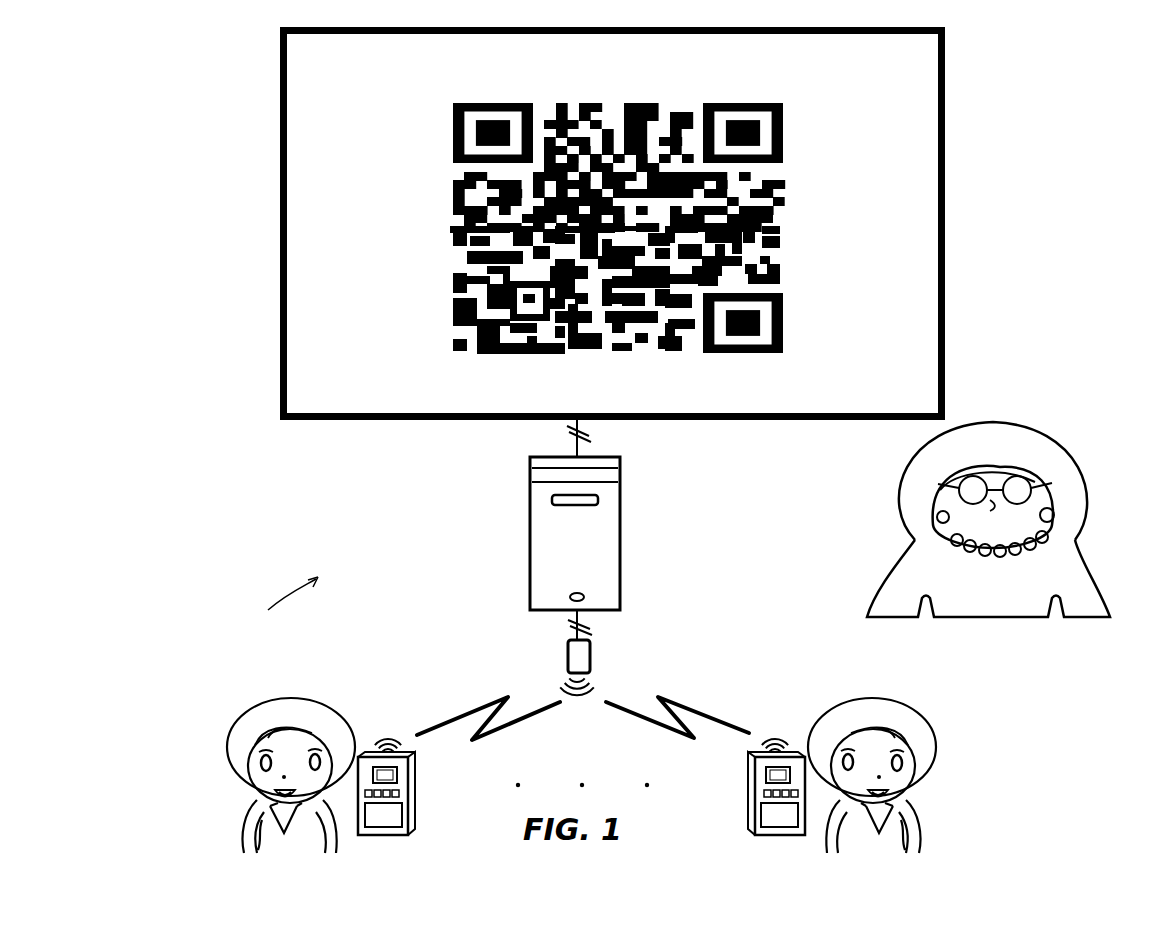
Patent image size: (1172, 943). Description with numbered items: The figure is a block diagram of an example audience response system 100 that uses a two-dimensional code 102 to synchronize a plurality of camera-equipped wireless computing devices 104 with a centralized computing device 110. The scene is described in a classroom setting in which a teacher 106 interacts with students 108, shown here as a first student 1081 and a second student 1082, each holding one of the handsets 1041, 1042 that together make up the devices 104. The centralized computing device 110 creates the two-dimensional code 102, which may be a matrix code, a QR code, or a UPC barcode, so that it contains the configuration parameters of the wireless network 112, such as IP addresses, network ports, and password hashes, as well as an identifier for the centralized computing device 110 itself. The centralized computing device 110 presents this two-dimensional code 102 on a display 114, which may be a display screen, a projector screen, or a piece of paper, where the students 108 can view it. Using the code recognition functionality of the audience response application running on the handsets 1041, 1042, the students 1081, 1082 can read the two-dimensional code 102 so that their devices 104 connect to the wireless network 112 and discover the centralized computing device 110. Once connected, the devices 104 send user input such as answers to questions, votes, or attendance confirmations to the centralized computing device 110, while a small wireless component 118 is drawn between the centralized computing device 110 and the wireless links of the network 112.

The audience response system 100 is at (273, 601).
The two-dimensional code 102 is at (782, 102).
The camera-equipped wireless computing devices 104 is at (581, 787).
The handset 1041 is at (416, 818).
The handset 1042 is at (750, 818).
The teacher 106 is at (960, 427).
The students 108 is at (581, 763).
The student 1081 is at (243, 710).
The student 1082 is at (830, 707).
The centralized computing device 110 is at (529, 555).
The wireless network 112 is at (673, 672).
The display 114 is at (281, 173).
The wireless transceiver dongle 118 is at (567, 658).